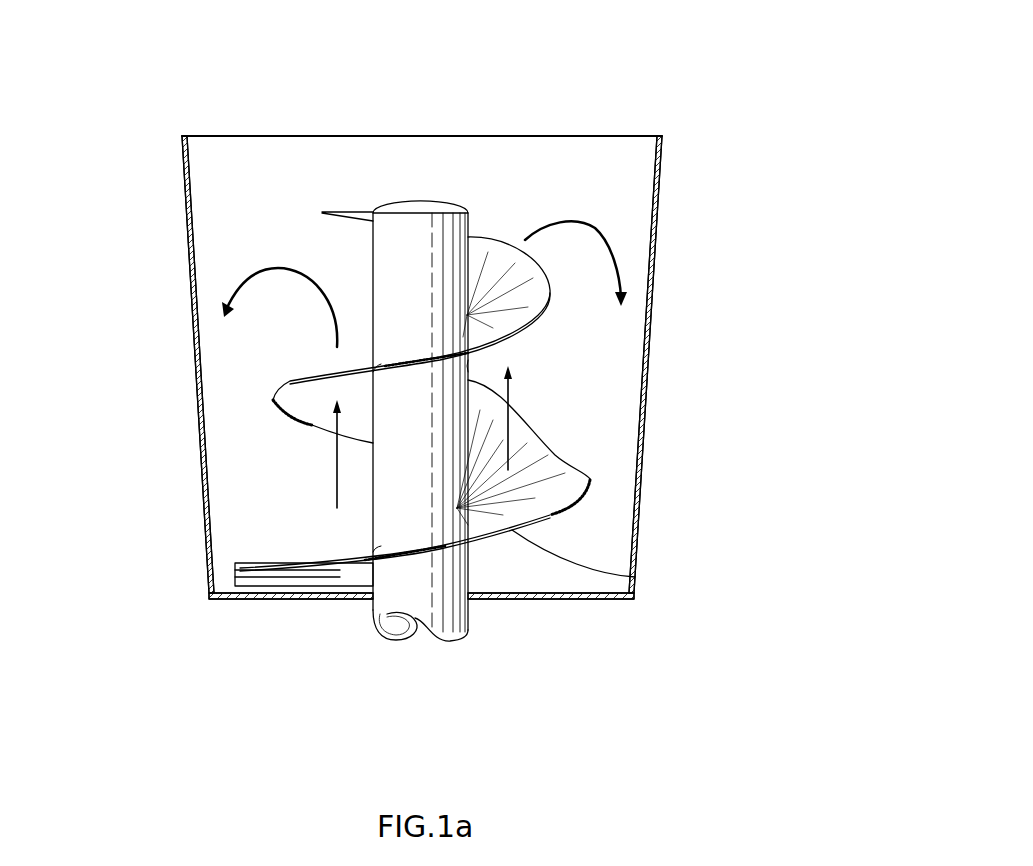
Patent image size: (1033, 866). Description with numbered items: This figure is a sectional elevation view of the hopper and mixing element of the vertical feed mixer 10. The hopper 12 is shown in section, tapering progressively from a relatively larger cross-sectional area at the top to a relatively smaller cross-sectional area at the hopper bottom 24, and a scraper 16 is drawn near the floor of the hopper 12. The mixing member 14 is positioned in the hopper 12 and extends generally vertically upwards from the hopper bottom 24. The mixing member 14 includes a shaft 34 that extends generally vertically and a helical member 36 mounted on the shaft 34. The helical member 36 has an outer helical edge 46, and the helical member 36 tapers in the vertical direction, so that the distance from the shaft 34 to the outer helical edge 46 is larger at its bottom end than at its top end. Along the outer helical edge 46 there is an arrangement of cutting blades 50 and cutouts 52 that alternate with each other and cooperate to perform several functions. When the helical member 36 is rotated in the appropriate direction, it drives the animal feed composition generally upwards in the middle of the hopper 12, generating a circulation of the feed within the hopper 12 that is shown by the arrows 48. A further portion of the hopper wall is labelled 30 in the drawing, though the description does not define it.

The vertical feed mixer 10 is at (448, 310).
The hopper 12 is at (657, 213).
The mixing member 14 is at (427, 335).
The scraper 16 is at (248, 580).
The hopper bottom 24 is at (228, 590).
The container lower wall portion 30 is at (638, 546).
The shaft 34 is at (420, 228).
The helical member 36 is at (293, 380).
The outer helical edge 46 is at (553, 294).
The arrows 48 is at (570, 218).
The cutting blades 50 is at (590, 482).
The cutouts 52 is at (635, 577).